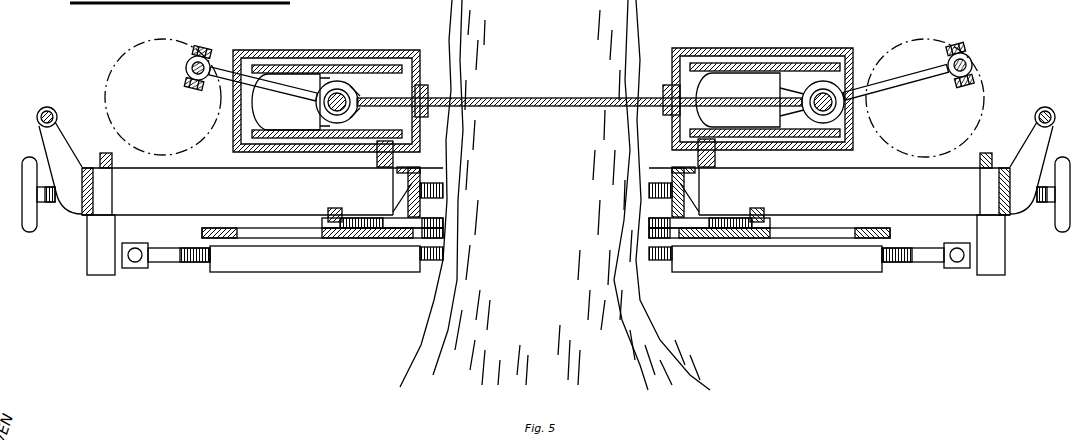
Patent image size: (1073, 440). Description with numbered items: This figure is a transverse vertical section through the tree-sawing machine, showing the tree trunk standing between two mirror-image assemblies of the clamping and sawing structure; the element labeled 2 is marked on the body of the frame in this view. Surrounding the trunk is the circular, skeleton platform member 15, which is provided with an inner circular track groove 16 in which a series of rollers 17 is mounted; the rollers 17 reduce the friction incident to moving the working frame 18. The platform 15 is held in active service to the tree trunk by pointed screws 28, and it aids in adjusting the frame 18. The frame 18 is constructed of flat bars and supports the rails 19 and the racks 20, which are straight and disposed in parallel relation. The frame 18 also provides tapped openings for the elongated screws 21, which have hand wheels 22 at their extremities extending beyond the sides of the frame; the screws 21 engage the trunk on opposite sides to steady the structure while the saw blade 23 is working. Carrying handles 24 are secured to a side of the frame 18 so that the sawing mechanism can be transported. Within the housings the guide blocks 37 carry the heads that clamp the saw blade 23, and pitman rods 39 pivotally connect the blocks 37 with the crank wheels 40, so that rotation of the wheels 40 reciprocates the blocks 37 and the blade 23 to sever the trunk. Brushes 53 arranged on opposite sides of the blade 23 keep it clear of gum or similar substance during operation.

The frame 2 is at (546, 221).
The platform member 15 is at (888, 230).
The inner circular track groove 16 is at (323, 218).
The rollers 17 is at (763, 212).
The working frame 18 is at (878, 168).
The rails 19 is at (980, 153).
The racks 20 is at (715, 163).
The elongated screws 21 is at (647, 193).
The hand wheels 22 is at (1060, 217).
The saw blade 23 is at (545, 106).
The carrying handles 24 is at (1043, 111).
The pointed screws 28 is at (955, 264).
The guide blocks 37 is at (795, 117).
The pitman rods 39 is at (900, 97).
The crank wheels 40 is at (915, 41).
The brushes 53 is at (668, 93).